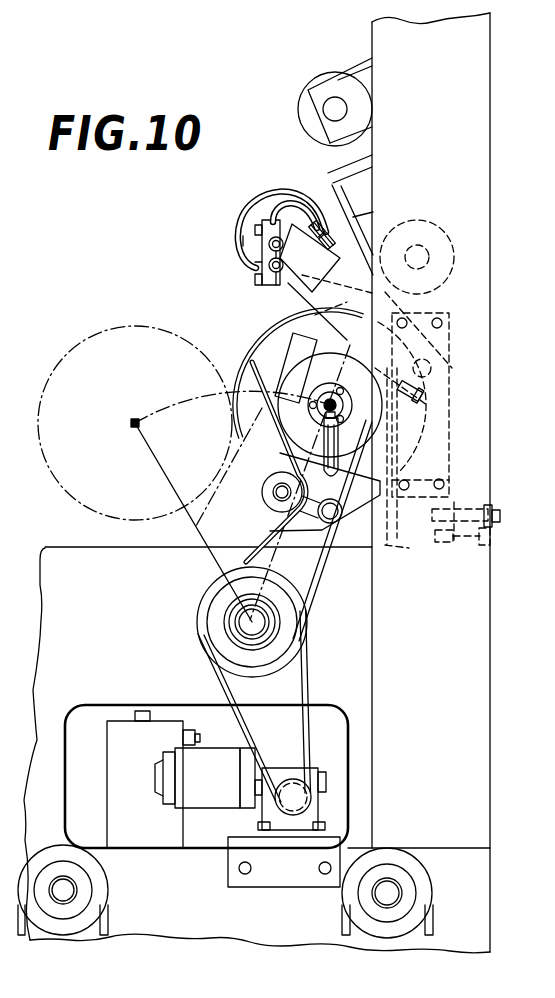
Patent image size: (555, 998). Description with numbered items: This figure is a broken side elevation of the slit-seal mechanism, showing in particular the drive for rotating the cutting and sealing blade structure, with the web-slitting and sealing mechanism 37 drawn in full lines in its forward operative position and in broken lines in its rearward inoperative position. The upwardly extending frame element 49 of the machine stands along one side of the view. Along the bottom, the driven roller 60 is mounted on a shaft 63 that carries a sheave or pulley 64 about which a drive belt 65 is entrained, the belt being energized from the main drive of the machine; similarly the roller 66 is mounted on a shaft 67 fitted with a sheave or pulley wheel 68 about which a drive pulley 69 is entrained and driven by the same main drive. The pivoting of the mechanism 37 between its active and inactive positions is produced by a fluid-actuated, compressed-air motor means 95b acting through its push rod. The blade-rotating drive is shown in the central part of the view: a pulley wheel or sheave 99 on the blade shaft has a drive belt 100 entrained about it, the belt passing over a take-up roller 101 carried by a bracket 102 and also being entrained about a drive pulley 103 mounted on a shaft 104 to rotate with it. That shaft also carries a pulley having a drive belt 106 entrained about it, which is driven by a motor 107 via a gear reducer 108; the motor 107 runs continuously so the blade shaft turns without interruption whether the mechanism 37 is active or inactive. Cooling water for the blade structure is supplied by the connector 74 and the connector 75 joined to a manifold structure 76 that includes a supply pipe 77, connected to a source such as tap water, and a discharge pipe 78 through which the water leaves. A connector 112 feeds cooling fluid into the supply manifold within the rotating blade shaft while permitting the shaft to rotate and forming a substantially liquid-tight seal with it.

The web-slitting and sealing mechanism 37 is at (135, 318).
The frame element 49 is at (487, 63).
The roller 60 is at (374, 914).
The shaft 63 is at (393, 906).
The sheave or pulley 64 is at (428, 893).
The drive belt 65 is at (437, 922).
The roller 66 is at (57, 912).
The shaft 67 is at (66, 897).
The sheave or pulley wheel 68 is at (104, 894).
The drive pulley 69 is at (107, 928).
The extension or connector conduit 74 is at (254, 208).
The extension or connector conduit 75 is at (294, 200).
The manifold structure 76 is at (254, 240).
The supply pipe 77 is at (262, 284).
The discharge pipe 78 is at (256, 264).
The motor means 95b is at (123, 721).
The pulley wheel or sheave 99 is at (283, 378).
The drive belt 100 is at (300, 458).
The take-up roller 101 is at (262, 492).
The bracket 102 is at (330, 558).
The drive pulley 103 is at (199, 592).
The shaft 104 is at (262, 628).
The drive belt 106 is at (310, 684).
The motor 107 is at (212, 785).
The gear reducer 108 is at (313, 812).
The connector 112 is at (331, 397).